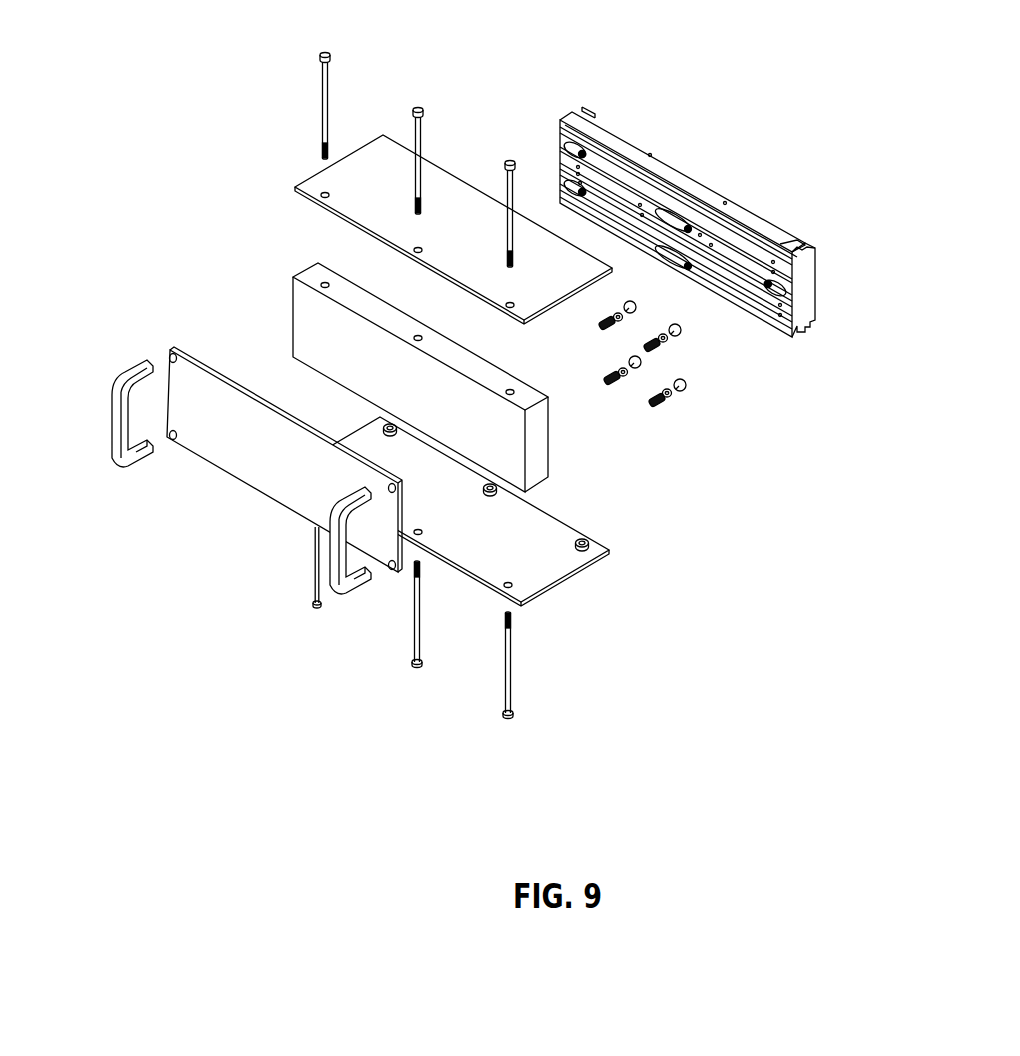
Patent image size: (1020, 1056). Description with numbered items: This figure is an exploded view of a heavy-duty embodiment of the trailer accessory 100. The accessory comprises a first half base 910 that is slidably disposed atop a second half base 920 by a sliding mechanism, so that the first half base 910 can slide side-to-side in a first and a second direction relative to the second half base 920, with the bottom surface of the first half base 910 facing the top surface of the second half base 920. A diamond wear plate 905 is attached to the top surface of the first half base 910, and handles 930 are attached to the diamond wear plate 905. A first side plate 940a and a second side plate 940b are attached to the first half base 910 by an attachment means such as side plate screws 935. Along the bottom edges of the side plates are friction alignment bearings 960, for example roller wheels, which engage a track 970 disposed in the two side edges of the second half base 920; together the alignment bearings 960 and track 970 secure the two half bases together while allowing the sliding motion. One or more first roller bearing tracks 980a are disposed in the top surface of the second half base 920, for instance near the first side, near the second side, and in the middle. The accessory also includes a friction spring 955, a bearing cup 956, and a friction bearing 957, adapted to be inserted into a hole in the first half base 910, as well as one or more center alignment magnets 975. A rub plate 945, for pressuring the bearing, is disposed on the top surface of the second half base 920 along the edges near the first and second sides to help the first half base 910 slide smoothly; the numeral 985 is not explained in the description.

The trailer accessory 100 is at (112, 131).
The diamond wear plate 905 is at (242, 487).
The first half base 910 is at (303, 268).
The second half base 920 is at (815, 287).
The handles 930 is at (135, 372).
The side plate screws 935 is at (322, 97).
The first side plate 940a is at (575, 583).
The second side plate 940b is at (298, 182).
The rub plate 945 is at (802, 237).
The friction spring 955 is at (660, 405).
The bearing cup 956 is at (670, 395).
The friction bearing 957 is at (686, 385).
The friction alignment bearings 960 is at (585, 540).
The track 970 is at (787, 247).
The center alignment magnets 975 is at (630, 185).
The first roller bearing tracks 980a is at (737, 265).
The slot 985 is at (585, 155).